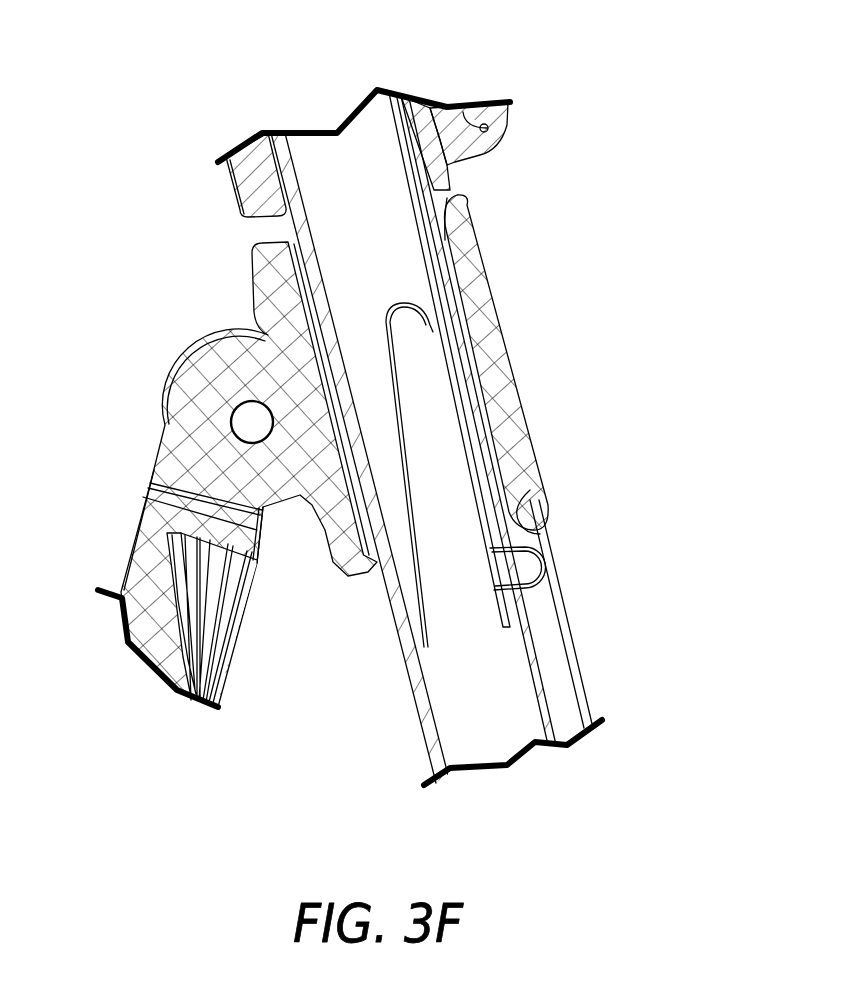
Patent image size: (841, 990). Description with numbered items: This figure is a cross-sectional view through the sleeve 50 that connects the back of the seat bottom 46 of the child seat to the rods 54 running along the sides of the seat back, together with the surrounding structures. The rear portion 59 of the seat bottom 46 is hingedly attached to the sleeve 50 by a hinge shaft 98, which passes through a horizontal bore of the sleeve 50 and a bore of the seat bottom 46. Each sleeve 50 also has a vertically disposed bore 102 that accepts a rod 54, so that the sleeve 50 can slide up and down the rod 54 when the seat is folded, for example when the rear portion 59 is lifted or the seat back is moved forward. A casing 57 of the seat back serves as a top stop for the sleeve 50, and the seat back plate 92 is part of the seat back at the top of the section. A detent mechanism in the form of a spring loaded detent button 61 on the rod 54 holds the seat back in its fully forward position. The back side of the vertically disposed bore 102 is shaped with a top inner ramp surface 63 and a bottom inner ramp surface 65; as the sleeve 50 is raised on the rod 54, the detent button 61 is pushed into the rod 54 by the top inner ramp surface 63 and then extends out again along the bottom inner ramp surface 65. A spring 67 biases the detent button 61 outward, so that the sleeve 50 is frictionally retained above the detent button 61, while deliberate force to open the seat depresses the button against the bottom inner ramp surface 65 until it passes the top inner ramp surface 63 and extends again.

The seat bottom 46 is at (130, 538).
The sleeve 50 is at (253, 352).
The rod 54 is at (535, 668).
The casing 57 is at (250, 165).
The rear portion of seat bottom 59 is at (168, 500).
The detent button 61 is at (545, 570).
The top inner ramp surface 63 is at (445, 218).
The bottom inner ramp surface 65 is at (540, 534).
The spring 67 is at (388, 312).
The seat back plate 92 is at (492, 128).
The hinge shaft 98 is at (250, 413).
The vertically disposed bore 102 is at (292, 252).